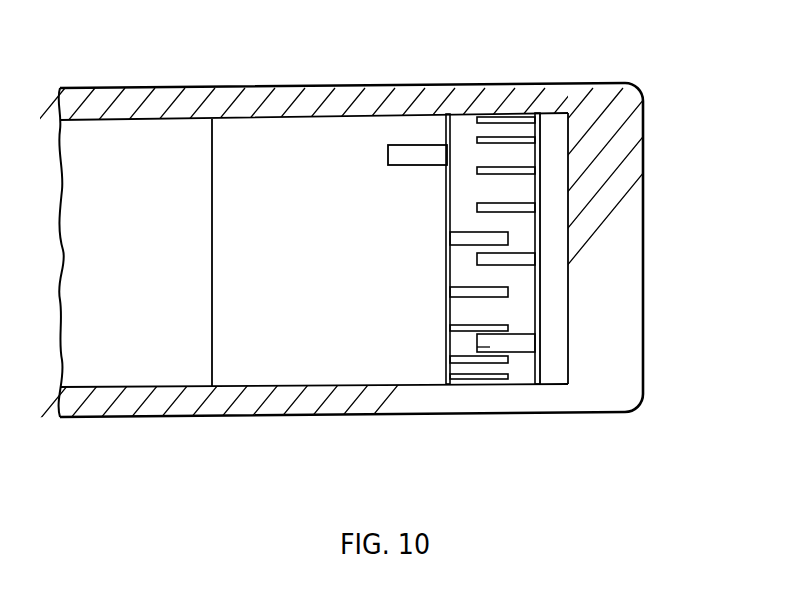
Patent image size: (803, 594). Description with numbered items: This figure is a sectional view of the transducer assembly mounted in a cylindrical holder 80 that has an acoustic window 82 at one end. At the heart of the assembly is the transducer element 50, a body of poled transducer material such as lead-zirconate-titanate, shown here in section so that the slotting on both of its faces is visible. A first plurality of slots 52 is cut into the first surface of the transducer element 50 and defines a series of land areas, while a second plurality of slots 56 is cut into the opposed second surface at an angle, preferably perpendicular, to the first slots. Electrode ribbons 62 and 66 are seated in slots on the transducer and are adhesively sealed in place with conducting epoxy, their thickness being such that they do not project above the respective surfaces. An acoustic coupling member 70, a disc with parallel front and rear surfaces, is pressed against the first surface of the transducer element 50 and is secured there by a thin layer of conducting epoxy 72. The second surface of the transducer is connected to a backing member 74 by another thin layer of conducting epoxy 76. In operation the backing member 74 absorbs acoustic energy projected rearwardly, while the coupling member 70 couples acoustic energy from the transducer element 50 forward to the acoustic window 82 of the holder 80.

The transducer element 50 is at (465, 121).
The first plurality of slots 52 is at (533, 208).
The second plurality of slots 56 is at (453, 328).
The electrode ribbon 62 is at (485, 347).
The electrode ribbon 66 is at (406, 147).
The acoustic coupling member 70 is at (557, 373).
The conducting epoxy 72 is at (540, 371).
The backing member 74 is at (322, 370).
The conducting epoxy 76 is at (447, 370).
The cylindrical holder 80 is at (260, 85).
The acoustic window 82 is at (636, 208).